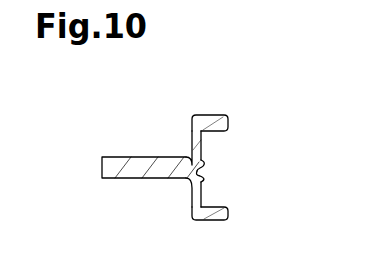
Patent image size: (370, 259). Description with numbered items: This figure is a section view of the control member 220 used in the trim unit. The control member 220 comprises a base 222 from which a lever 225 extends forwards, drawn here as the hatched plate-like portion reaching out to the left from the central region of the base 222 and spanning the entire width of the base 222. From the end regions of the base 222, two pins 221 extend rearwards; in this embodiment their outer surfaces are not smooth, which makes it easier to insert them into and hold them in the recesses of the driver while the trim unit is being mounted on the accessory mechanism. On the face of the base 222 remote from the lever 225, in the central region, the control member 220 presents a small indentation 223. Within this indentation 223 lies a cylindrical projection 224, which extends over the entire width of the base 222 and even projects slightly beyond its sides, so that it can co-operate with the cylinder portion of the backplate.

The control member 220 is at (179, 149).
The pins 221 is at (219, 115).
The base 222 is at (192, 133).
The indentation 223 is at (202, 177).
The cylindrical projection 224 is at (203, 168).
The lever 225 is at (115, 168).